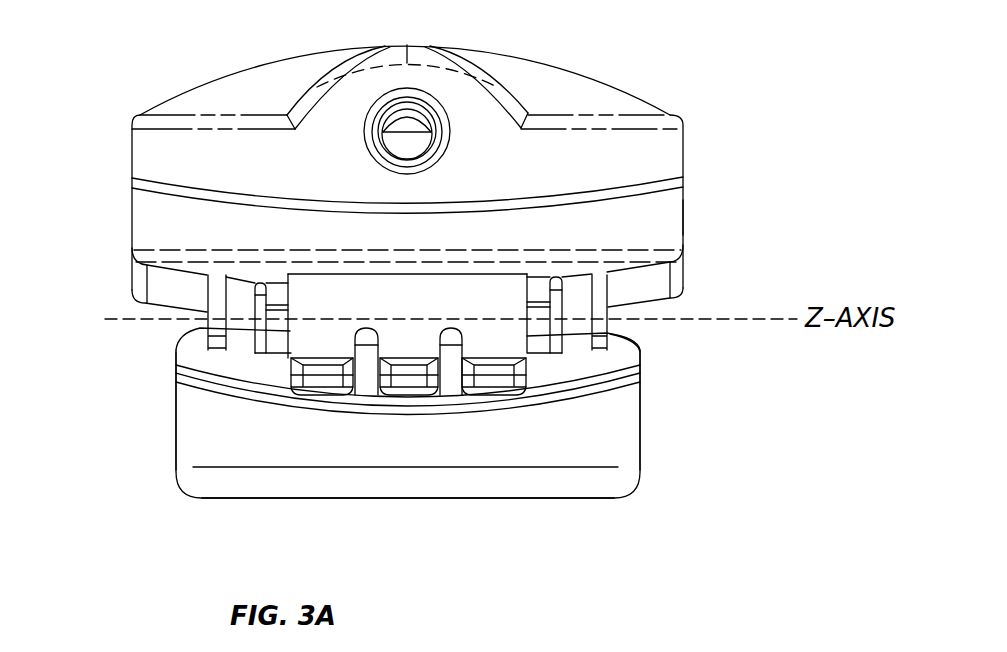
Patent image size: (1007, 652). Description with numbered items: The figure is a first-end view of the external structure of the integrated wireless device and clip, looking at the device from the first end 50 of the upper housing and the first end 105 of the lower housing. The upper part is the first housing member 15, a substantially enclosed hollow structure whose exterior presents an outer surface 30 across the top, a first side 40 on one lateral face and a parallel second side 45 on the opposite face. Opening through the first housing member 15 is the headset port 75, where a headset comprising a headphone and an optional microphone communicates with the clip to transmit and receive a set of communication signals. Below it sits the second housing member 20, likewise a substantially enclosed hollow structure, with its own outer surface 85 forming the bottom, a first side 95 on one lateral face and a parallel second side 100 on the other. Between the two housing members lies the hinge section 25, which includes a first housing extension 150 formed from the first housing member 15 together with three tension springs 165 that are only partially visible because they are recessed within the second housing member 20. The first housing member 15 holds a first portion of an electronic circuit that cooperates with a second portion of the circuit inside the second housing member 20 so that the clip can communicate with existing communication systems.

The first housing member 15 is at (648, 60).
The outer surface 30 is at (267, 63).
The headset port 75 is at (409, 128).
The first end 50 is at (672, 151).
The second side 45 is at (124, 201).
The first side 40 is at (696, 218).
The first housing extension 150 is at (290, 331).
The hinge section 25 is at (660, 331).
The second housing member 20 is at (652, 540).
The second side 100 is at (160, 421).
The first side 95 is at (658, 414).
The first end 105 is at (465, 447).
The outer surface 85 is at (358, 506).
The tension springs 165 is at (393, 415).